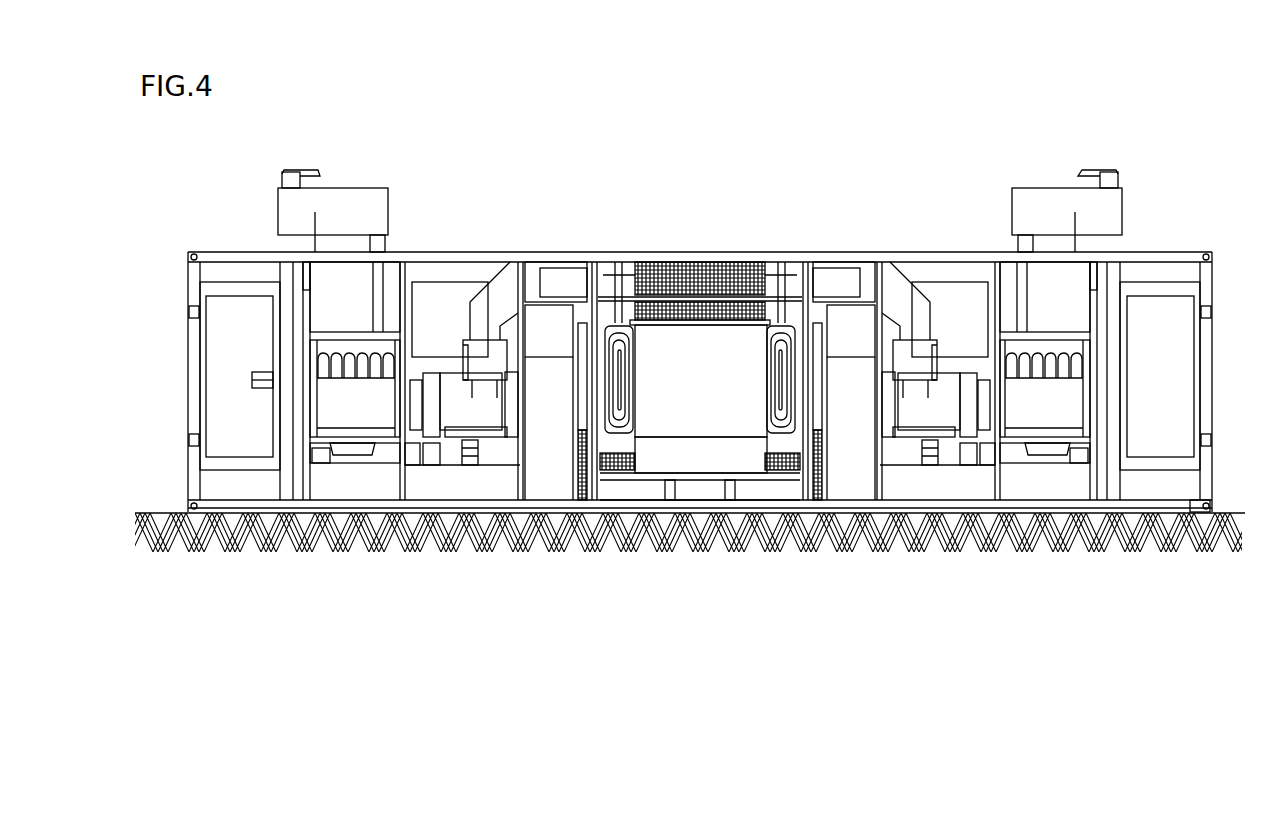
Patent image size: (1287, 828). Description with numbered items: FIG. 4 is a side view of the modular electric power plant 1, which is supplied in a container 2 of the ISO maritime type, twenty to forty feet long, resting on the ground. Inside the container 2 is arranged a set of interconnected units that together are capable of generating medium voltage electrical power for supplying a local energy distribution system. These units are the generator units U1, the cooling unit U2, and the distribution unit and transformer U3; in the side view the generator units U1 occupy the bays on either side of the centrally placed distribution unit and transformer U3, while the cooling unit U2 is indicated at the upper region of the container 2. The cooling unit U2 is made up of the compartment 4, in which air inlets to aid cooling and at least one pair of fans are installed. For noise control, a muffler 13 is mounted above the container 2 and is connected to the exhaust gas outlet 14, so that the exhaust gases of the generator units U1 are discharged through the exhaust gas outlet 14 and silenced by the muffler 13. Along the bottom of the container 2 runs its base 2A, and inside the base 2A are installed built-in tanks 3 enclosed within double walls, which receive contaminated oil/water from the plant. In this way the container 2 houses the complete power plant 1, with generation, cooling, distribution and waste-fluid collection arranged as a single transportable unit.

The modular electric power plant 1 is at (839, 230).
The container 2 is at (1151, 230).
The base 2A is at (1131, 520).
The built-in tanks 3 is at (462, 481).
The compartment 4 is at (235, 229).
The muffler 13 is at (350, 188).
The exhaust gas outlet 14 is at (388, 247).
The generator units U1 is at (442, 232).
The cooling unit U2 is at (263, 203).
The distribution unit and transformer U3 is at (683, 242).